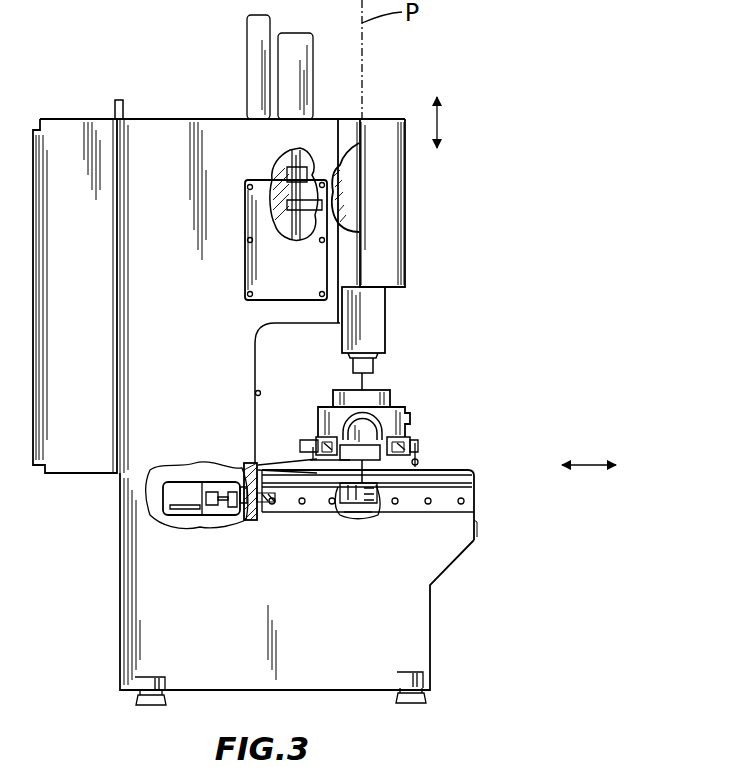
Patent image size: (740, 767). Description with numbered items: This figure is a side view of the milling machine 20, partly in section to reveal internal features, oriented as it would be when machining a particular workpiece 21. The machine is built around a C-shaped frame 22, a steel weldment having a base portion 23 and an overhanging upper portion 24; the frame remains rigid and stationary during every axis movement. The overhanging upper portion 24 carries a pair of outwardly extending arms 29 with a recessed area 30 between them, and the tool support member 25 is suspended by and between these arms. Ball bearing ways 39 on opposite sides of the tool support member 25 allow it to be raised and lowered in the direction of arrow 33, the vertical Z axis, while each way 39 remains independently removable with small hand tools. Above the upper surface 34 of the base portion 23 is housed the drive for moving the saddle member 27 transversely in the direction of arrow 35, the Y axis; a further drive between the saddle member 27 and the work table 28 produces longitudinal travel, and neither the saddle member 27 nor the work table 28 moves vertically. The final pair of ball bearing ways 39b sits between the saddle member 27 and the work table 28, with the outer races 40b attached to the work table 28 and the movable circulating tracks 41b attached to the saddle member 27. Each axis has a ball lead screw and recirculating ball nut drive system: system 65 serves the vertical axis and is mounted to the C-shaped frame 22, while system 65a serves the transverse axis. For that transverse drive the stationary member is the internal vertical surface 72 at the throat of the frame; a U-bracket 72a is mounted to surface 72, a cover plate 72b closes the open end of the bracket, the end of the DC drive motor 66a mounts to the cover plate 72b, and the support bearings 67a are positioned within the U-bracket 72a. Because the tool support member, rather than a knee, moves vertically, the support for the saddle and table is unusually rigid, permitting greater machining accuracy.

The milling machine 20 is at (480, 167).
The workpiece 21 is at (375, 390).
The C-shaped frame 22 is at (130, 493).
The base portion 23 is at (432, 607).
The overhanging upper portion 24 is at (317, 128).
The tool support member 25 is at (407, 243).
The saddle member 27 is at (415, 455).
The work table 28 is at (413, 433).
The outwardly extending arms 29 is at (347, 117).
The recessed area 30 is at (366, 110).
The arrow 33 is at (437, 132).
The upper surface 34 is at (462, 492).
The arrow 35 is at (592, 463).
The ball bearing ways 39 is at (349, 185).
The ball bearing ways 39b is at (407, 462).
The outer races 40b is at (338, 463).
The movable circulating tracks 41b is at (413, 443).
The ball lead screw and recirculating ball nut drive system 65 is at (258, 178).
The ball lead screw and recirculating ball nut drive system 65a is at (349, 530).
The DC drive motor 66a is at (178, 507).
The support bearings 67a is at (230, 511).
The internal vertical surface 72 is at (232, 513).
The U-bracket 72a is at (217, 483).
The cover plate 72b is at (212, 482).